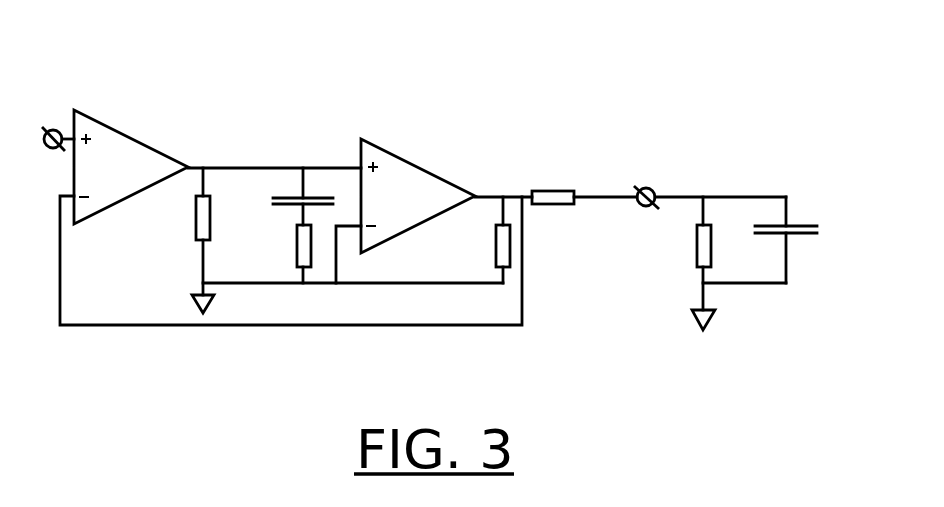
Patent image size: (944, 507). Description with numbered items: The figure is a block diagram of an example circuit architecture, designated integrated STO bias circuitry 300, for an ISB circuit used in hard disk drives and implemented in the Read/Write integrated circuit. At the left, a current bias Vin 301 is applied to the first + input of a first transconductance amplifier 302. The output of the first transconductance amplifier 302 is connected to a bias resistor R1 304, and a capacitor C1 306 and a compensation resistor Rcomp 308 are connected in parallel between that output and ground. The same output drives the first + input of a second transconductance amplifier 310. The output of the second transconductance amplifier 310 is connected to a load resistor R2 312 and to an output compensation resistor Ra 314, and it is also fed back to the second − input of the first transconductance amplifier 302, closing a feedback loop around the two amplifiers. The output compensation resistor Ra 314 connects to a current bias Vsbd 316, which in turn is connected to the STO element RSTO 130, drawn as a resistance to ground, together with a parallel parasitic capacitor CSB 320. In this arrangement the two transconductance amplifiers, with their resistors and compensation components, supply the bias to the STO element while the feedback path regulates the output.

The integrated STO bias circuitry 300 is at (436, 81).
The current bias Vin 301 is at (49, 108).
The first transconductance amplifier 302 is at (131, 167).
The bias resistor R1 304 is at (185, 240).
The capacitor C1 306 is at (286, 196).
The compensation resistor Rcomp 308 is at (265, 253).
The second transconductance amplifier 310 is at (446, 196).
The load resistor R2 312 is at (483, 240).
The output compensation resistor Ra 314 is at (584, 171).
The current bias Vsbd 316 is at (705, 172).
The STO element RSTO 130 is at (711, 263).
The parasitic capacitor CSB 320 is at (808, 240).